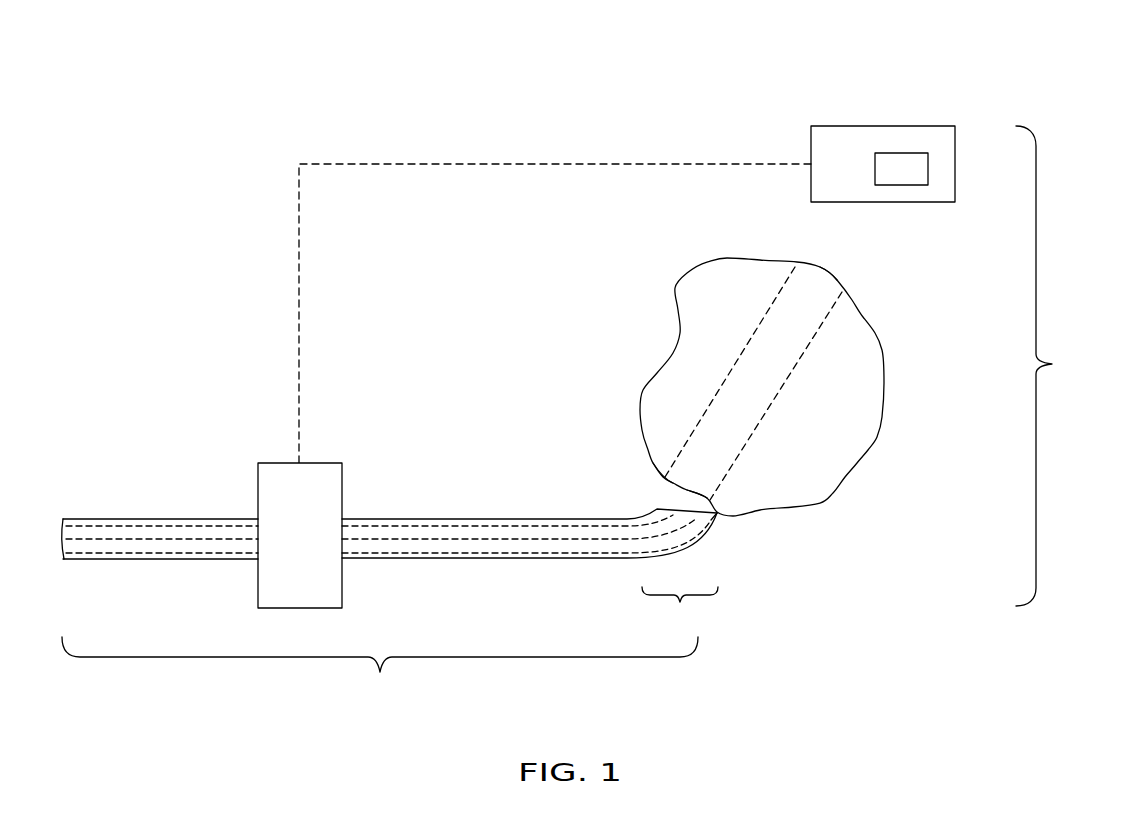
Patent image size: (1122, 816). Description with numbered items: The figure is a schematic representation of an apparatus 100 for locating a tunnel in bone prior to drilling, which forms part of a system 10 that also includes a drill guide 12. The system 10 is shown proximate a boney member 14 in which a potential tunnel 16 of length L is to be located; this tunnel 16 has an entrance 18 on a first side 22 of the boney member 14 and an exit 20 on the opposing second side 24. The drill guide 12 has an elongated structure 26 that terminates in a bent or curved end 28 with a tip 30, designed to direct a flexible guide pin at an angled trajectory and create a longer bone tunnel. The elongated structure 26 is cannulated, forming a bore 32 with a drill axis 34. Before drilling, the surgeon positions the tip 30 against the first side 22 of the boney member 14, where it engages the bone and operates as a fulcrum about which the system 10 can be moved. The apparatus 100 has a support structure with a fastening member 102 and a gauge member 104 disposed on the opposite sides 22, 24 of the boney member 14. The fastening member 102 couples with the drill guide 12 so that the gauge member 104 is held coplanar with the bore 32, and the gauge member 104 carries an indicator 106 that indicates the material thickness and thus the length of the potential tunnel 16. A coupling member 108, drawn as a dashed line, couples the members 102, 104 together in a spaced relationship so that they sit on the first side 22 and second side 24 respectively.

The apparatus 100 is at (158, 148).
The system 10 is at (1047, 366).
The drill guide 12 is at (415, 583).
The boney member 14 is at (858, 493).
The potential tunnel 16 is at (795, 368).
The entrance 18 is at (678, 478).
The exit 20 is at (820, 266).
The first side 22 is at (636, 474).
The second side 24 is at (856, 266).
The elongated structure 26 is at (523, 560).
The curved end 28 is at (680, 612).
The tip 30 is at (724, 528).
The bore 32 is at (422, 522).
The drill axis 34 is at (140, 538).
The fastening member 102 is at (237, 493).
The gauge member 104 is at (876, 96).
The indicator 106 is at (928, 170).
The coupling member 108 is at (543, 160).